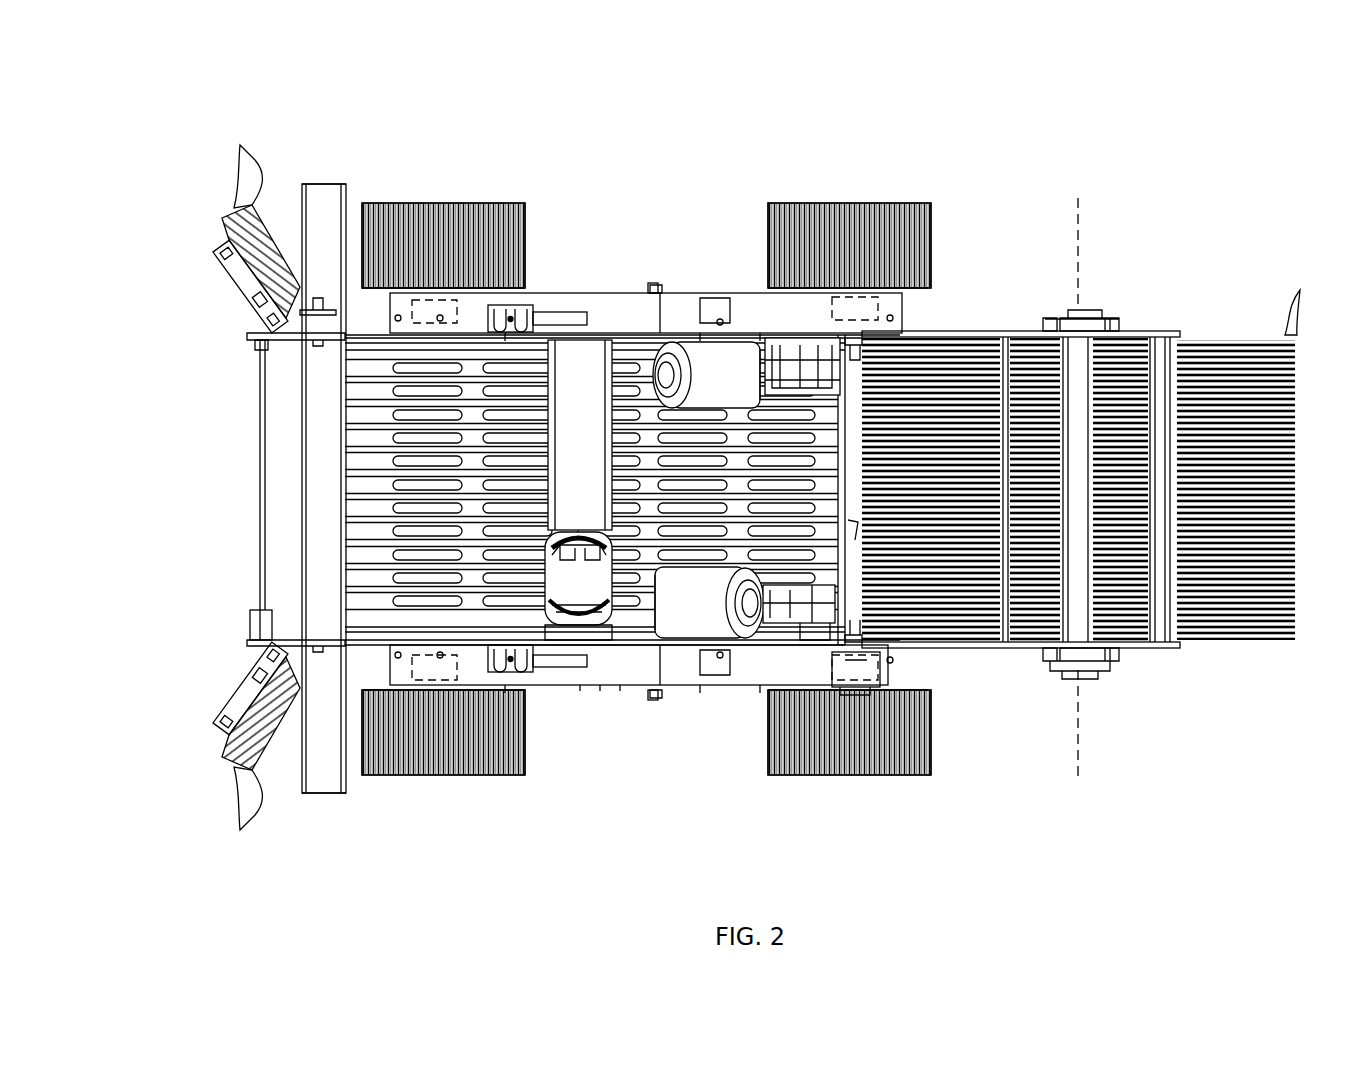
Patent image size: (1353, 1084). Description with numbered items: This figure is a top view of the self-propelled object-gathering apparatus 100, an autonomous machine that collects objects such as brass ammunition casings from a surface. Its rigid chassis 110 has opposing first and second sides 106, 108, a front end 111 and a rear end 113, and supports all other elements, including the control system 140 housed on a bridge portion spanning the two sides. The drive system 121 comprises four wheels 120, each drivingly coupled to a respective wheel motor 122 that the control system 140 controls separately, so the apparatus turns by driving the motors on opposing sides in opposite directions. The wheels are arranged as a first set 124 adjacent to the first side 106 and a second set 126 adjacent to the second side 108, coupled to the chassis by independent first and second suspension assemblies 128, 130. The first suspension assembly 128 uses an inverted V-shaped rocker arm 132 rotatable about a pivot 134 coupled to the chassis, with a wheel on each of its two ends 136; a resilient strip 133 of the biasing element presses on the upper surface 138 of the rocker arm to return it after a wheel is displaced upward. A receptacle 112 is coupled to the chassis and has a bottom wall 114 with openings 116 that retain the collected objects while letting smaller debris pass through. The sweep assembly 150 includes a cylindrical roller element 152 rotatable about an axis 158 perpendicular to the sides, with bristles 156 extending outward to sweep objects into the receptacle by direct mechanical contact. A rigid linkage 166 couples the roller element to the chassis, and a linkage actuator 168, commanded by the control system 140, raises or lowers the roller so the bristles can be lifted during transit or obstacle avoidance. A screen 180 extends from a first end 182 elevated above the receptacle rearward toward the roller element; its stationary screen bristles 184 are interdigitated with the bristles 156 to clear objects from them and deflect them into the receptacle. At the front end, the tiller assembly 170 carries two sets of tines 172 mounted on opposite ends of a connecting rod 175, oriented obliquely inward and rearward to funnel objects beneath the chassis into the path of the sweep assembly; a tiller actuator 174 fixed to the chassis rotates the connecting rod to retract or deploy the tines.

The self-propelled object-gathering apparatus 100 is at (703, 467).
The first side 106 is at (360, 630).
The second side 108 is at (372, 338).
The chassis 110 is at (346, 215).
The front end 111 is at (290, 405).
The receptacle 112 is at (365, 440).
The rear end 113 is at (855, 522).
The bottom wall 114 is at (370, 475).
The openings 116 is at (493, 533).
The wheels 120 is at (658, 490).
The drive system 121 is at (370, 200).
The wheel motor 122 is at (440, 300).
The first set of wheels 124 is at (455, 776).
The second set of wheels 126 is at (430, 203).
The first suspension assembly 128 is at (610, 692).
The second suspension assembly 130 is at (624, 282).
The rocker arm 132 is at (530, 302).
The resilient strip 133 is at (573, 312).
The pivot 134 is at (652, 283).
The ends 136 is at (398, 310).
The upper surface 138 is at (652, 326).
The control system 140 is at (583, 360).
The sweep assembly 150 is at (1090, 469).
The roller element 152 is at (1155, 338).
The bristles 156 is at (1098, 457).
The axis 158 is at (1062, 476).
The rigid linkage 166 is at (985, 332).
The linkage actuator 168 is at (718, 365).
The tiller assembly 170 is at (186, 476).
The tines 172 is at (242, 476).
The tiller actuator 174 is at (255, 612).
The connecting rod 175 is at (262, 495).
The screen 180 is at (940, 333).
The first end 182 is at (770, 370).
The screen bristles 184 is at (872, 690).